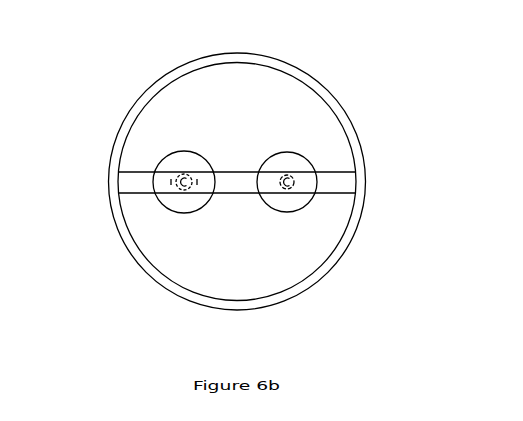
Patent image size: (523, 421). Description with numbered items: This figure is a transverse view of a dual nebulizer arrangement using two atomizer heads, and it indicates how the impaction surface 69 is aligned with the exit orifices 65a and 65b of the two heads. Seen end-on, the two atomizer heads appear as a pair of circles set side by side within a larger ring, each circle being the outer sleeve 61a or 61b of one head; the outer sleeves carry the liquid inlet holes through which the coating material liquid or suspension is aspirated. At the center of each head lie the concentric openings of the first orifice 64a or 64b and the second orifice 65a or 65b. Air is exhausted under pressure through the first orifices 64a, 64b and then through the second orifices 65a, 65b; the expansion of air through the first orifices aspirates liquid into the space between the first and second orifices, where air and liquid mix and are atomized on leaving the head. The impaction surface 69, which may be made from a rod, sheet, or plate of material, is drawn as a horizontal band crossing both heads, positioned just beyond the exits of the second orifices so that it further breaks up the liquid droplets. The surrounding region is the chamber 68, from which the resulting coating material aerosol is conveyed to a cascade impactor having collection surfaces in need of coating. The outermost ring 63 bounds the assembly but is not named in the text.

The outer ring 63 is at (277, 58).
The chamber 68 is at (267, 90).
The impaction surface 69 is at (245, 182).
The outer sleeve 61a is at (167, 208).
The outer sleeve 61b is at (294, 153).
The second orifice 65a is at (173, 178).
The second orifice 65b is at (284, 177).
The first orifice 64a is at (175, 181).
The first orifice 64b is at (293, 183).